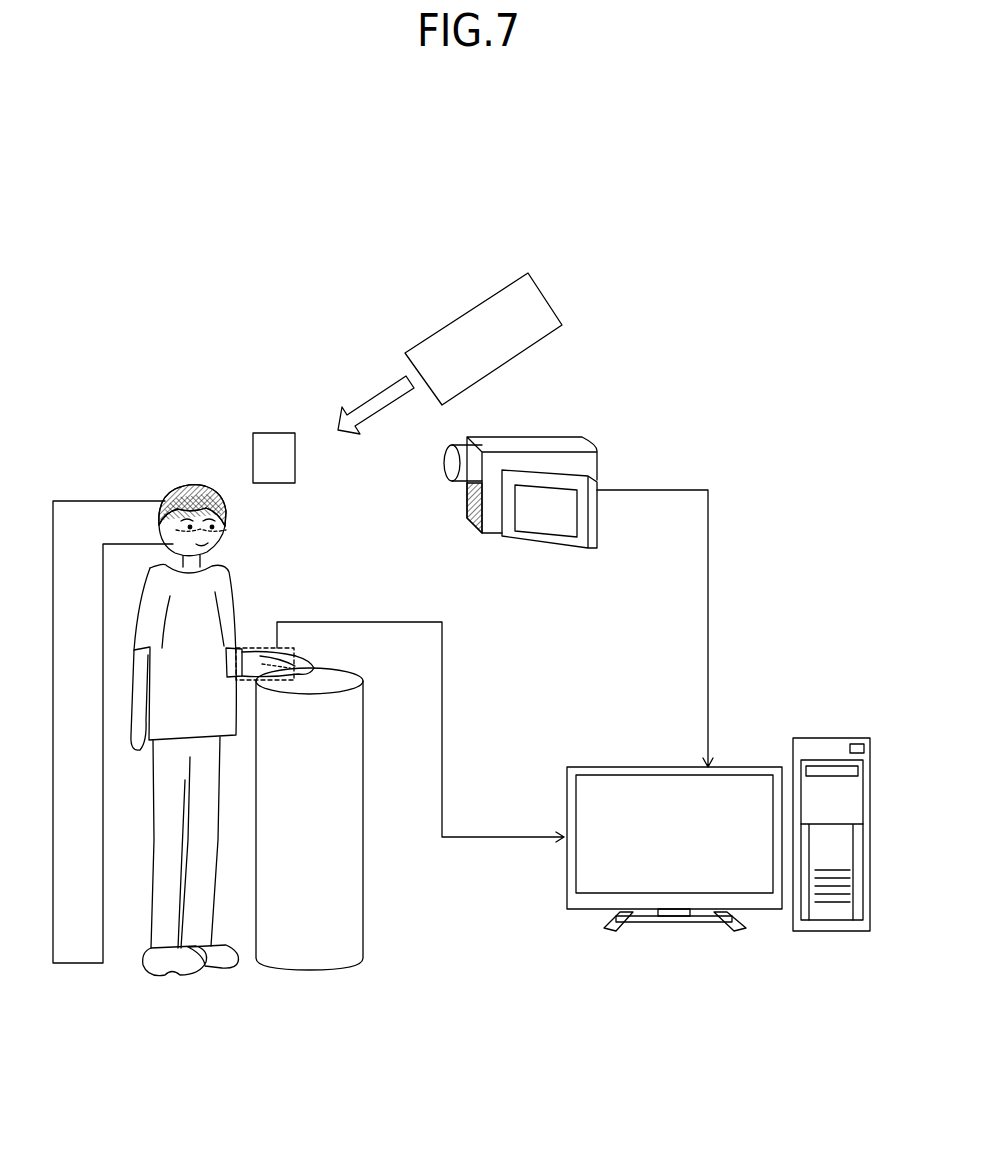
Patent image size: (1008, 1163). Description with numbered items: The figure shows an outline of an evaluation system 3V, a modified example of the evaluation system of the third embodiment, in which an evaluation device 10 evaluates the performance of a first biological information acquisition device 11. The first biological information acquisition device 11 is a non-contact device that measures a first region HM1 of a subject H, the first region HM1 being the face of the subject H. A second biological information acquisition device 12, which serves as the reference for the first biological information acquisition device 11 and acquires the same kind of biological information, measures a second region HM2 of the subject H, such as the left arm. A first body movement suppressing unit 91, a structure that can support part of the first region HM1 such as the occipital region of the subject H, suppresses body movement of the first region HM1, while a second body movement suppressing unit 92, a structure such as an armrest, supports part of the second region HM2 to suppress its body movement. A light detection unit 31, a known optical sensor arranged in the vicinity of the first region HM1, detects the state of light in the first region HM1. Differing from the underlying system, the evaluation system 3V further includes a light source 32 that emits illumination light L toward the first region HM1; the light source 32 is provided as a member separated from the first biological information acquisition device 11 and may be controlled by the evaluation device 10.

The evaluation system 3V is at (810, 292).
The first body movement suppressing unit 91 is at (77, 500).
The subject H is at (179, 490).
The first region HM1 is at (228, 530).
The second biological information acquisition device 12 is at (261, 656).
The second region HM2 is at (277, 694).
The second body movement suppressing unit 92 is at (362, 870).
The light detection unit 31 is at (273, 439).
The light source 32 is at (470, 322).
The illumination light L is at (377, 398).
The first biological information acquisition device 11 is at (564, 444).
The evaluation device 10 is at (737, 767).